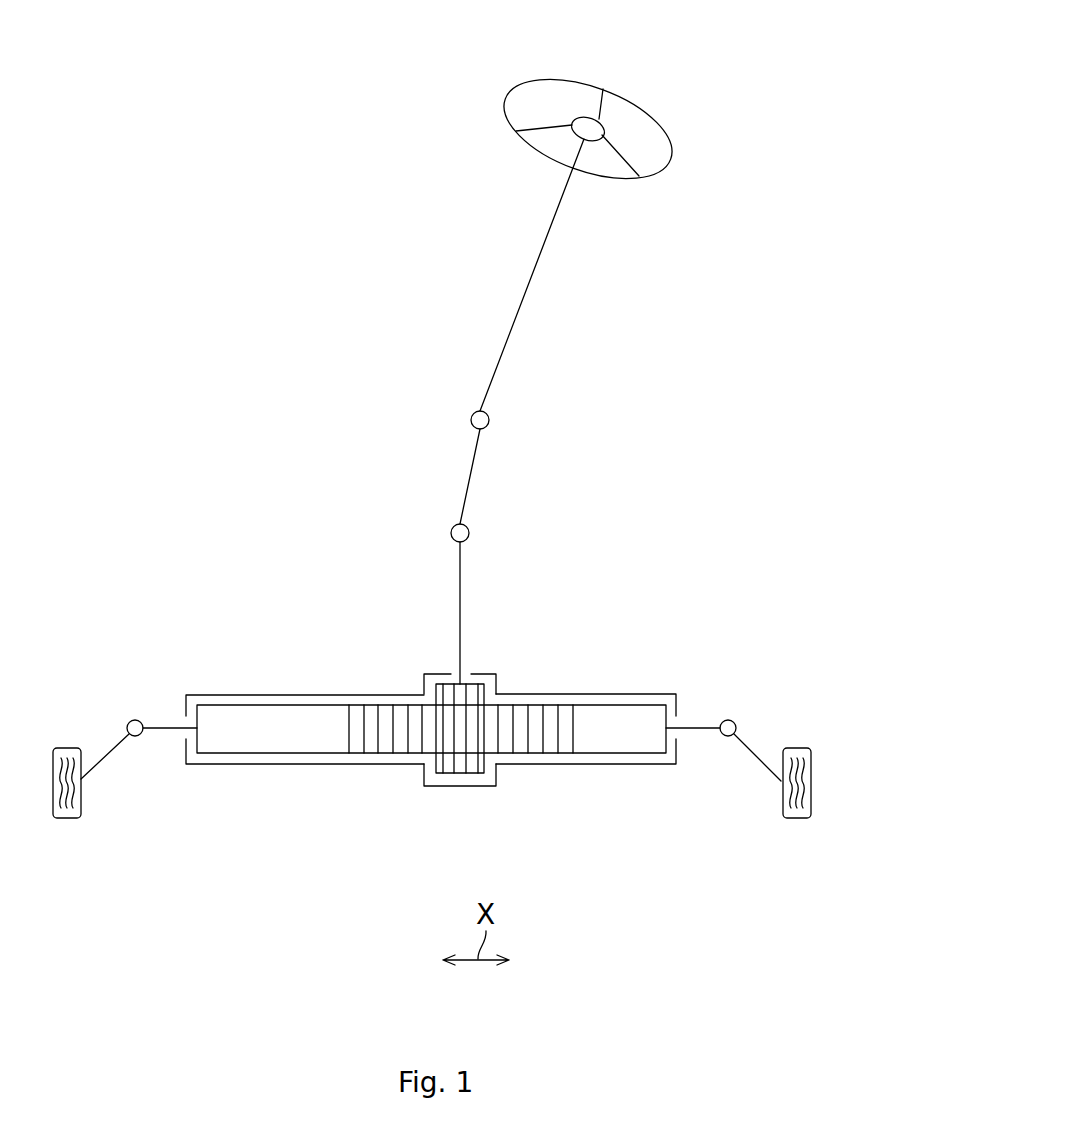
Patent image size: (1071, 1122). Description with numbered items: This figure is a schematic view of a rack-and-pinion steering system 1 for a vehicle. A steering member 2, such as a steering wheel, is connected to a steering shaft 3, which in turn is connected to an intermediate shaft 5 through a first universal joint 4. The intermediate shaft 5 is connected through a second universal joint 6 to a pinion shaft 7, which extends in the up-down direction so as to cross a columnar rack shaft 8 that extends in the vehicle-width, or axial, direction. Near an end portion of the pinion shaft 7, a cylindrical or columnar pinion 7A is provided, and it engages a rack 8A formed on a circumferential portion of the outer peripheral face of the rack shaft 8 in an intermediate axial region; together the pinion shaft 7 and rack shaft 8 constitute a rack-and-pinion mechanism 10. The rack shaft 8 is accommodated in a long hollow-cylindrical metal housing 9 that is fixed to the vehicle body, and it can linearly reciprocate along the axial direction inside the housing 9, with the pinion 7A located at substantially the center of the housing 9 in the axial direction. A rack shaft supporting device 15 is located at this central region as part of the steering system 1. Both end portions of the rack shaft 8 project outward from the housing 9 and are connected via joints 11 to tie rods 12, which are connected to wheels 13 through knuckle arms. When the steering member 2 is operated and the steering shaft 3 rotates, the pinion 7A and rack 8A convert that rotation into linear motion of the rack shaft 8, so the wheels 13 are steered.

The rack-and-pinion steering system 1 is at (693, 74).
The steering member 2 is at (562, 78).
The steering shaft 3 is at (532, 275).
The first universal joint 4 is at (489, 421).
The intermediate shaft 5 is at (467, 481).
The second universal joint 6 is at (468, 533).
The pinion shaft 7 is at (464, 618).
The pinion 7A is at (473, 765).
The rack shaft 8 is at (533, 755).
The rack 8A is at (402, 742).
The housing 9 is at (336, 693).
The rack-and-pinion mechanism 10 is at (496, 792).
The joint 11 is at (137, 719).
The tie rod 12 is at (113, 752).
The wheel 13 is at (65, 818).
The rack shaft supporting device 15 is at (494, 683).